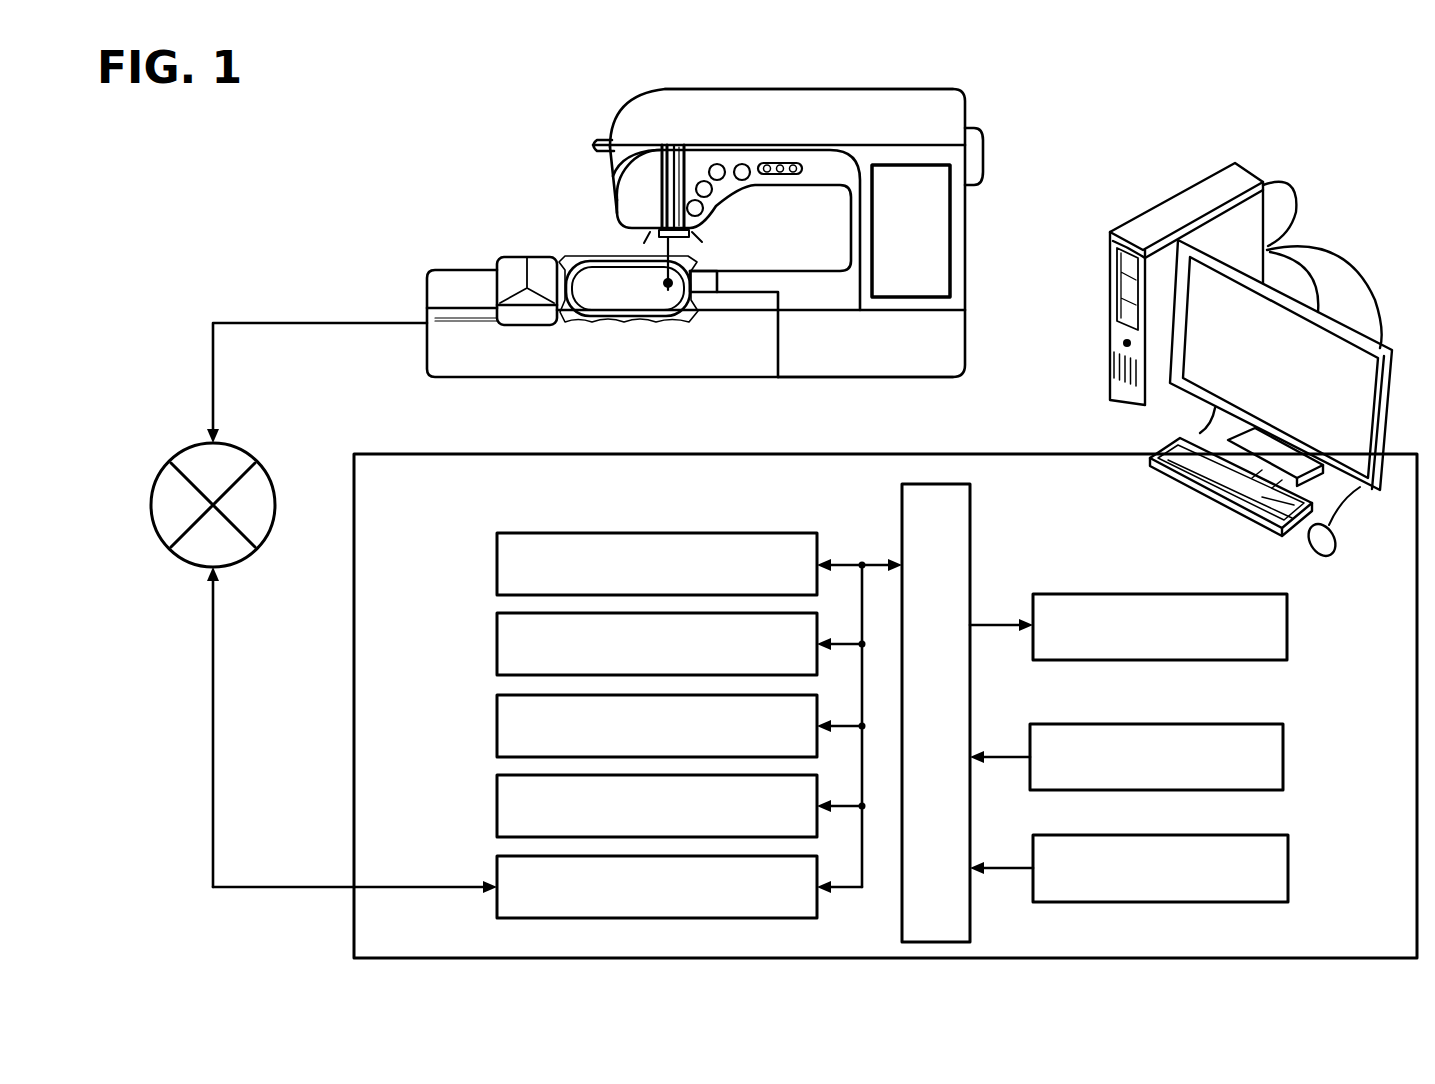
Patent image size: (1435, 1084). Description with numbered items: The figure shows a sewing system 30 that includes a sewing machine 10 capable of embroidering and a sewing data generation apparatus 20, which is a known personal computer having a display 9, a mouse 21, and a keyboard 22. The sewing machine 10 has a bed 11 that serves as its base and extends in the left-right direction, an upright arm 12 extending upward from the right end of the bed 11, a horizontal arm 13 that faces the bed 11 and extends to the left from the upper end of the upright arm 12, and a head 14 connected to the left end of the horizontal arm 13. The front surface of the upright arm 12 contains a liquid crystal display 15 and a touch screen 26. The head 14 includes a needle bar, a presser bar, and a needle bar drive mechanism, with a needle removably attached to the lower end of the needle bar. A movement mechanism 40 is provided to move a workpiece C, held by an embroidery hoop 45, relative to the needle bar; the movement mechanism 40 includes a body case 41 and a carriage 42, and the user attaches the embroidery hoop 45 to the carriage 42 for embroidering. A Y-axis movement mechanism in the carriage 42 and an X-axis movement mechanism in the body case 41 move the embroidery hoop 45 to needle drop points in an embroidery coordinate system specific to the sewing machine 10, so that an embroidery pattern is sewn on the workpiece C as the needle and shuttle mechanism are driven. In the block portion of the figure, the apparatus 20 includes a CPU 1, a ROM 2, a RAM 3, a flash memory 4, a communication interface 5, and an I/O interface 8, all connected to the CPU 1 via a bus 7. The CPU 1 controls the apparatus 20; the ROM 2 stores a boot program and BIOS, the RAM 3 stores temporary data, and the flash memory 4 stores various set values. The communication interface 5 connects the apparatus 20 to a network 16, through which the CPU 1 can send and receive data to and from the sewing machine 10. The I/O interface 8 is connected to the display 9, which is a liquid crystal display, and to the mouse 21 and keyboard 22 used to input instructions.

The CPU 1 is at (497, 562).
The ROM 2 is at (497, 645).
The RAM 3 is at (497, 727).
The flash memory 4 is at (497, 807).
The communication interface 5 is at (497, 866).
The bus 7 is at (864, 877).
The I/O interface 8 is at (900, 517).
The display 9 is at (1290, 628).
The sewing machine 10 is at (804, 238).
The bed 11 is at (800, 290).
The upright arm 12 is at (967, 207).
The horizontal arm 13 is at (755, 128).
The head 14 is at (640, 208).
The liquid crystal display 15 is at (912, 298).
The touch screen 26 is at (937, 412).
The network 16 is at (250, 555).
The sewing data generation apparatus 20 is at (336, 739).
The mouse 21 is at (1288, 757).
The keyboard 22 is at (1290, 868).
The sewing system 30 is at (189, 838).
The movement mechanism 40 is at (549, 324).
The body case 41 is at (472, 348).
The carriage 42 is at (533, 317).
The embroidery hoop 45 is at (690, 313).
The workpiece C is at (693, 317).